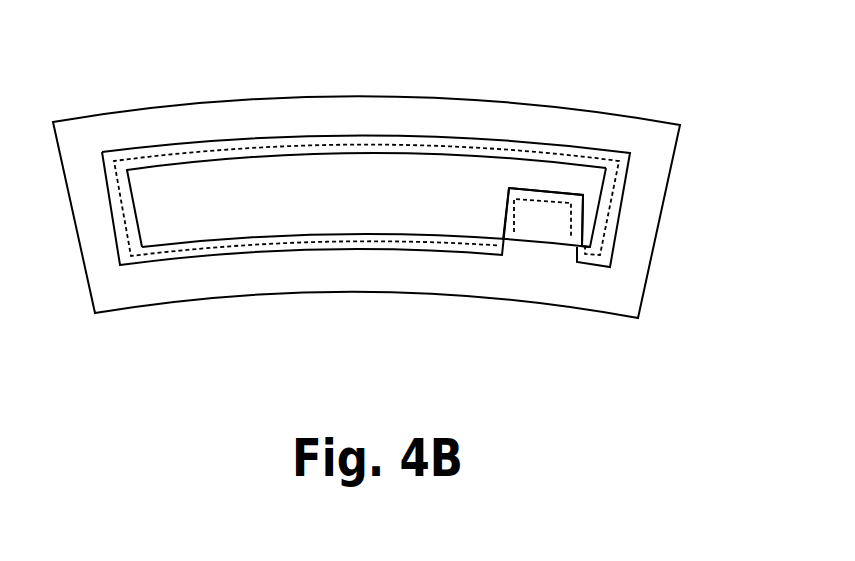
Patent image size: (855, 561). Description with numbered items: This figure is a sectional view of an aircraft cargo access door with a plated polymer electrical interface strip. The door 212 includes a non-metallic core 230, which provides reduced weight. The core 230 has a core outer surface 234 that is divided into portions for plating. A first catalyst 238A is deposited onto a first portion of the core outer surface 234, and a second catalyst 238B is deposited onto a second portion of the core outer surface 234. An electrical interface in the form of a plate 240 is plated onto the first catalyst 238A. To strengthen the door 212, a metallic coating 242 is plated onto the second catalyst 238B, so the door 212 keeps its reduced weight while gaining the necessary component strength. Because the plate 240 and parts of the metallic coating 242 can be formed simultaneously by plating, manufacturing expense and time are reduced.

The door 212 is at (719, 93).
The non-metallic core 230 is at (353, 206).
The core outer surface 234 is at (140, 215).
The first catalyst 238A is at (552, 198).
The second catalyst 238B is at (439, 142).
The plate 240 is at (546, 232).
The metallic coating 242 is at (267, 143).